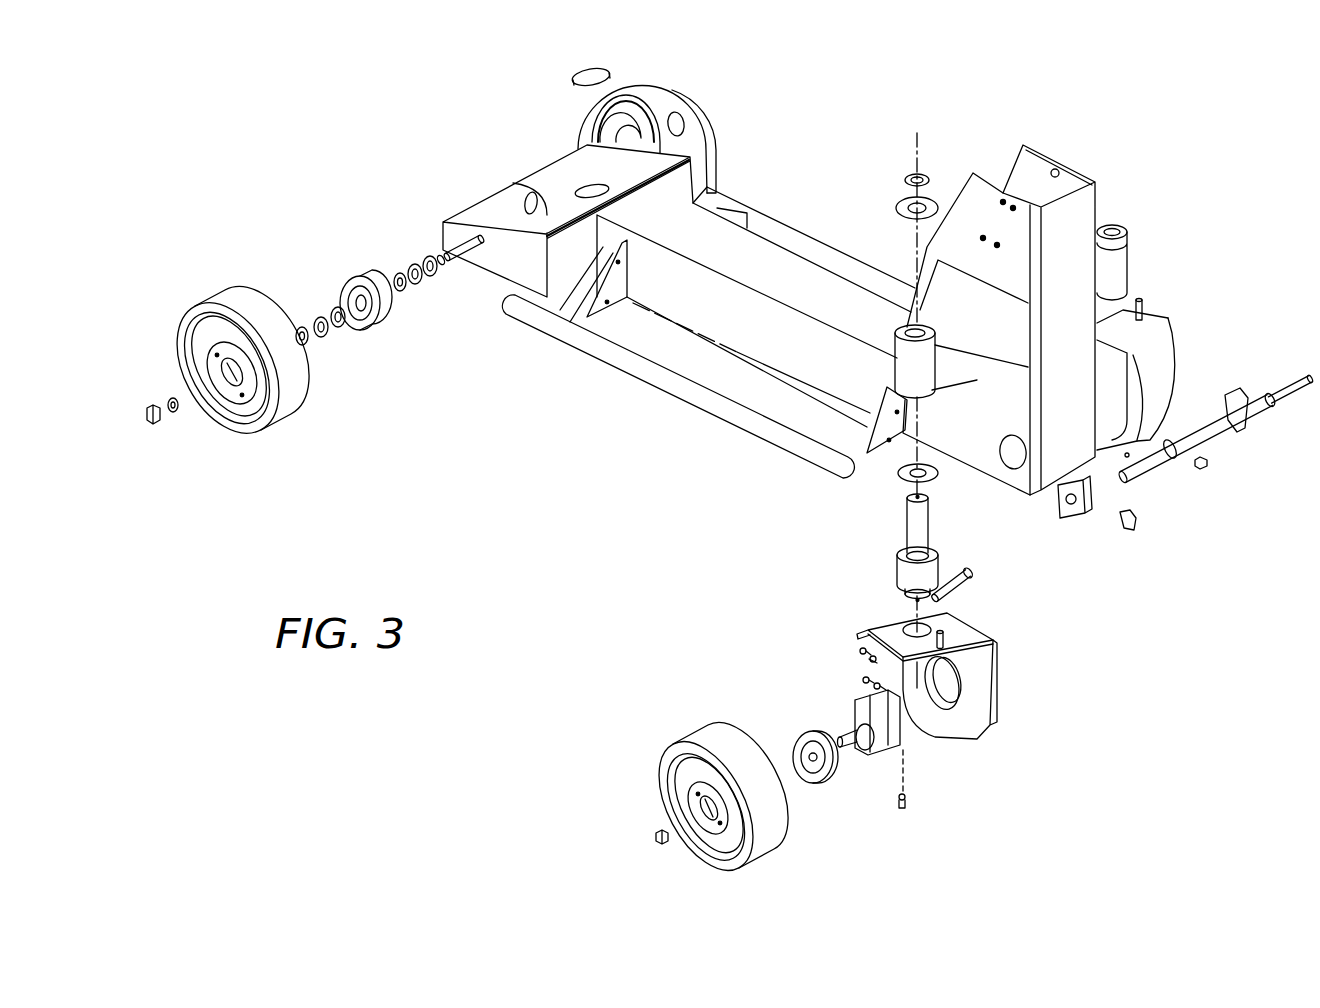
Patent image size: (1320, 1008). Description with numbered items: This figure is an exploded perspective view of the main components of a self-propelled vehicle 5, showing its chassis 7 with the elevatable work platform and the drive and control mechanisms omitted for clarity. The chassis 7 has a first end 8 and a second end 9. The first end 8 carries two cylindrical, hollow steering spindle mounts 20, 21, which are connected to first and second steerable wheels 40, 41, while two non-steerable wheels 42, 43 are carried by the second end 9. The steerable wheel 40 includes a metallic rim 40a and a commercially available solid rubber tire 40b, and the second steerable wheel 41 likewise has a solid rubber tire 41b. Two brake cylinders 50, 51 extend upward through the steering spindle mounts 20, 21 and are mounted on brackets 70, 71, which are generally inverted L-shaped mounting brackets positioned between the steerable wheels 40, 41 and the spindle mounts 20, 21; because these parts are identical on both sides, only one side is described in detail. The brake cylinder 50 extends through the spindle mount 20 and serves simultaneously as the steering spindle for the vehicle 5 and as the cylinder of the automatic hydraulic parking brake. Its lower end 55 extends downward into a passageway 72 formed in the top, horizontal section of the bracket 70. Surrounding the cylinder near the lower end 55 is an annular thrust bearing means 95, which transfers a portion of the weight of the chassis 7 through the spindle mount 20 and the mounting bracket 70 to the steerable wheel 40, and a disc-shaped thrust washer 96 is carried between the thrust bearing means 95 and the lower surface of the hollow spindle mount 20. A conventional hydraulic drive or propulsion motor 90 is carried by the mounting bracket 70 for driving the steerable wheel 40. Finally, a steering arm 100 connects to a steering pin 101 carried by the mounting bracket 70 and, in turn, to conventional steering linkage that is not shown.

The self-propelled vehicle 5 is at (744, 183).
The chassis 7 is at (788, 263).
The first end 8 is at (1090, 200).
The second end 9 is at (502, 203).
The steering spindle mount 20 is at (903, 367).
The steering spindle mount 21 is at (1128, 238).
The first steerable wheel 40 is at (697, 883).
The metallic rim 40a is at (687, 778).
The solid rubber tire 40b is at (773, 853).
The second steerable wheel 41 is at (1180, 408).
The solid rubber tire 41b is at (1157, 383).
The non-steerable wheel 42 is at (237, 302).
The non-steerable wheel 43 is at (650, 90).
The brake cylinder 50 is at (905, 503).
The brake cylinder 51 is at (1118, 223).
The lower end 55 is at (905, 596).
The mounting bracket 70 is at (992, 677).
The mounting bracket 71 is at (1117, 387).
The passageway 72 is at (947, 613).
The hydraulic drive motor 90 is at (850, 702).
The thrust bearing means 95 is at (900, 540).
The thrust washer 96 is at (935, 481).
The steering arm 100 is at (967, 585).
The steering pin 101 is at (955, 667).